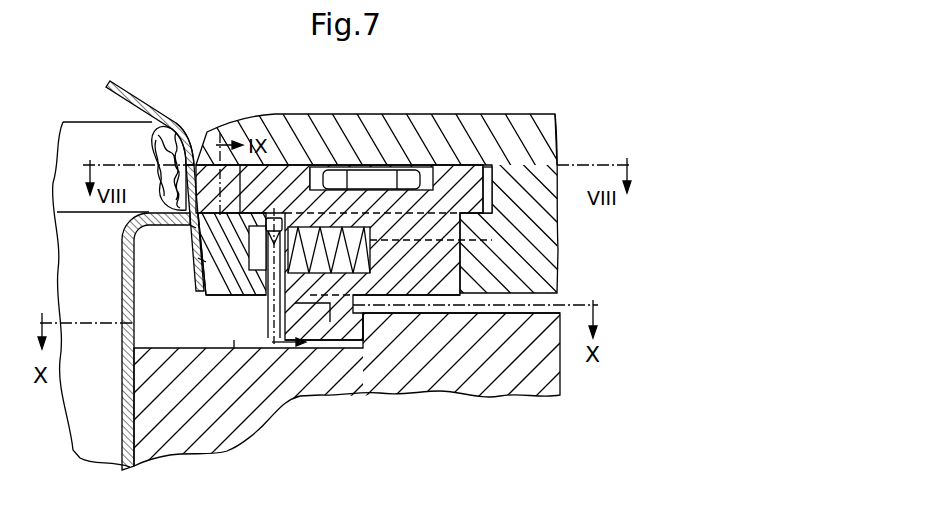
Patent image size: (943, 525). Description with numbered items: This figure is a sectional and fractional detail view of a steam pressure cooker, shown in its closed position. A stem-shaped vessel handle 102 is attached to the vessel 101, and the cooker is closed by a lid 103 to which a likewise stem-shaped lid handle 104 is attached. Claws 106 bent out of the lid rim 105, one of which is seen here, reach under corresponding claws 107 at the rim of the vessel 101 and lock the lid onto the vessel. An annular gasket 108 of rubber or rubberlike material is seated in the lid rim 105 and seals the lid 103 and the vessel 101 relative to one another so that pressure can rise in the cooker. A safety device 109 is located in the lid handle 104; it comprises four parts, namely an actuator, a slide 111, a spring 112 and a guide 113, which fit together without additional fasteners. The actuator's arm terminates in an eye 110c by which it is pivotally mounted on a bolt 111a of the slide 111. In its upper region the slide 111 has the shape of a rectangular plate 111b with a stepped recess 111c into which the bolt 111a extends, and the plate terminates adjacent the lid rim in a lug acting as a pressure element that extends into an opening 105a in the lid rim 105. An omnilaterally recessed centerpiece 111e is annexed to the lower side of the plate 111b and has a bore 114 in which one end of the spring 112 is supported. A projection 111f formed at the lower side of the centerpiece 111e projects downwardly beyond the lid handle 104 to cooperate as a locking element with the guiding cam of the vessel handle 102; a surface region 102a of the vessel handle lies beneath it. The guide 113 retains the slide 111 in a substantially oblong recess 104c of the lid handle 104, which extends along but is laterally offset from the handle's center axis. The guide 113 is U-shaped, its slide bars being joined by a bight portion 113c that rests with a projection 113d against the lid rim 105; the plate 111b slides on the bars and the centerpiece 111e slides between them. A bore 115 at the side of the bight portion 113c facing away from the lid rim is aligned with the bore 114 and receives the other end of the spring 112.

The vessel 101 is at (103, 433).
The vessel handle 102 is at (213, 423).
The upper surface of base frame member 102a is at (345, 348).
The lid 103 is at (130, 98).
The lid handle 104 is at (298, 112).
The oblong recess 104c is at (493, 202).
The lid rim 105 is at (197, 127).
The opening in the lid rim 105a is at (200, 140).
The claws 106 is at (195, 236).
The claws 107 is at (214, 255).
The annular gasket 108 is at (173, 110).
The safety device 109 is at (491, 157).
The eye 110c is at (413, 172).
The slide 111 is at (460, 187).
The bolt 111a is at (390, 172).
The rectangular plate 111b is at (283, 190).
The stepped recess 111c is at (317, 173).
The centerpiece 111e is at (447, 283).
The projection 111f is at (315, 322).
The spring 112 is at (276, 296).
The guide 113 is at (237, 285).
The bight portion 113c is at (194, 296).
The projection 113d is at (198, 305).
The bore 114 is at (362, 265).
The bore 115 is at (236, 338).